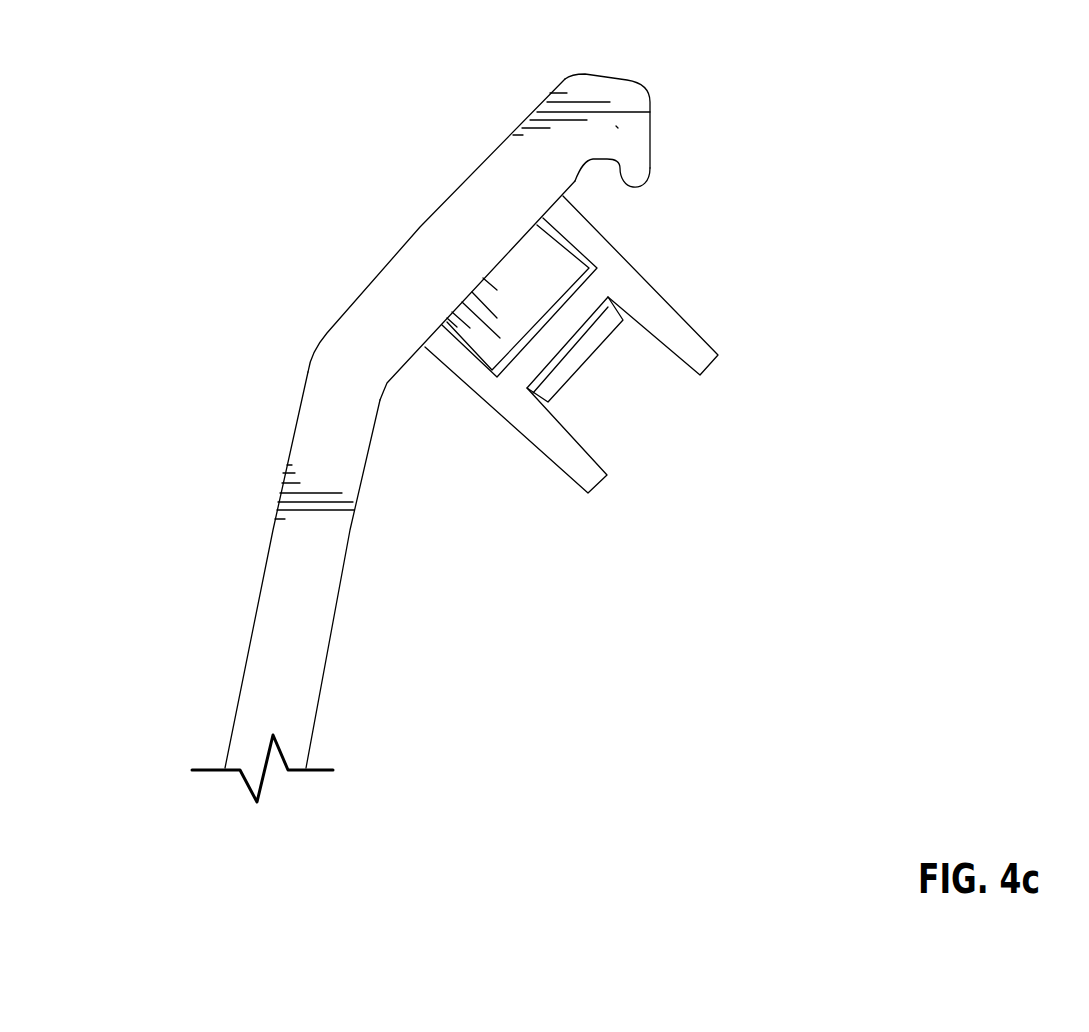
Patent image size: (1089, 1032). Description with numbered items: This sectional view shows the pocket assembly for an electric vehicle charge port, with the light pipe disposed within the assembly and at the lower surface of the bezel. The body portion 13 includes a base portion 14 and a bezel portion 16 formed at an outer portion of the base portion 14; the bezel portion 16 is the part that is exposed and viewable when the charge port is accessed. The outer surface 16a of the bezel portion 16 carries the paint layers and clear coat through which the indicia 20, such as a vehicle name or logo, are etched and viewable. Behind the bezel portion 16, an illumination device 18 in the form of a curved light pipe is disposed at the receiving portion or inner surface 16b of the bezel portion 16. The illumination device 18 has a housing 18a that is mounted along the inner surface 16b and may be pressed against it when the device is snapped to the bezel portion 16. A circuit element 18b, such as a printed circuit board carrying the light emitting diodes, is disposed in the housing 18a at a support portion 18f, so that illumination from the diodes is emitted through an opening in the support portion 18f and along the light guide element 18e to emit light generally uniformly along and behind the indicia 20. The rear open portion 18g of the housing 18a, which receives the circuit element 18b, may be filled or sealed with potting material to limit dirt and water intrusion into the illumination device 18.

The body portion 13 is at (530, 416).
The base portion 14 is at (346, 656).
The bezel portion 16 is at (550, 215).
The outer surface of bezel portion 16a is at (507, 133).
The inner surface of bezel portion 16b is at (577, 187).
The illumination device 18 is at (642, 364).
The housing 18a is at (567, 448).
The circuit element 18b is at (597, 340).
The light guide element 18e is at (488, 327).
The support portion 18f is at (600, 285).
The rear open portion 18g is at (640, 398).
The indicia 20 is at (518, 215).